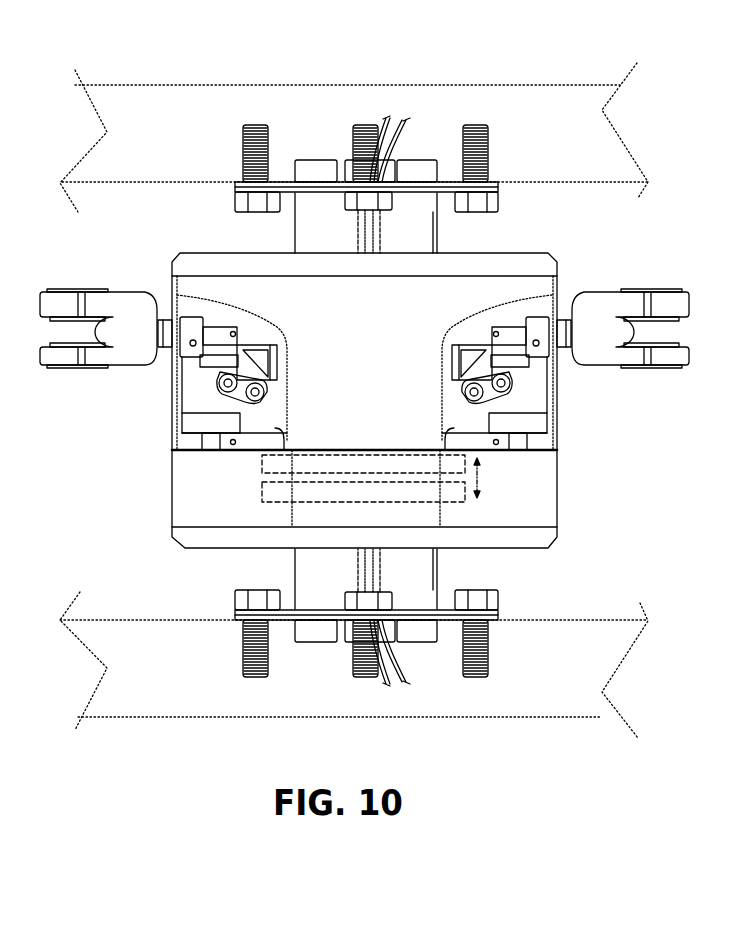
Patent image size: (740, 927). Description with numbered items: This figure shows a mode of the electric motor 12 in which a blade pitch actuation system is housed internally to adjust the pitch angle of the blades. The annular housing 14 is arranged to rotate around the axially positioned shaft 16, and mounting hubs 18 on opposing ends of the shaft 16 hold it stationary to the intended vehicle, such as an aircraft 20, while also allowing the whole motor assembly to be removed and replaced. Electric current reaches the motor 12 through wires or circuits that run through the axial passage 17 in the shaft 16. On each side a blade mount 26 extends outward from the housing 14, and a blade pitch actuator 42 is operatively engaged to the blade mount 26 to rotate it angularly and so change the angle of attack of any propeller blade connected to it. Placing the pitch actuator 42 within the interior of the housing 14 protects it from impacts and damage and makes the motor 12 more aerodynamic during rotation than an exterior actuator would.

The electric motor 12 is at (183, 549).
The annular housing 14 is at (558, 434).
The axially positioned shaft 16 is at (423, 233).
The axial passage 17 is at (357, 224).
The mounting hubs 18 is at (490, 187).
The aircraft 20 is at (155, 108).
The blade mount 26 is at (123, 292).
The blade pitch actuator 42 is at (230, 350).